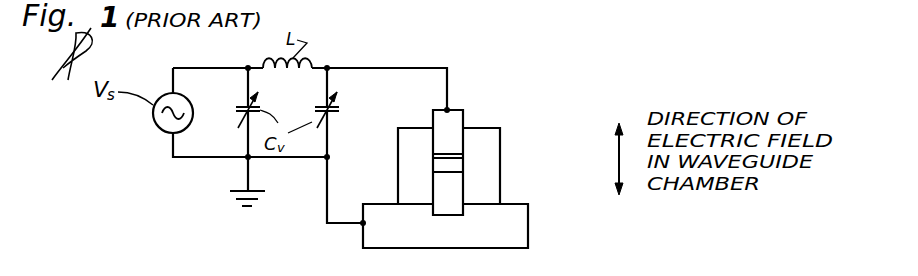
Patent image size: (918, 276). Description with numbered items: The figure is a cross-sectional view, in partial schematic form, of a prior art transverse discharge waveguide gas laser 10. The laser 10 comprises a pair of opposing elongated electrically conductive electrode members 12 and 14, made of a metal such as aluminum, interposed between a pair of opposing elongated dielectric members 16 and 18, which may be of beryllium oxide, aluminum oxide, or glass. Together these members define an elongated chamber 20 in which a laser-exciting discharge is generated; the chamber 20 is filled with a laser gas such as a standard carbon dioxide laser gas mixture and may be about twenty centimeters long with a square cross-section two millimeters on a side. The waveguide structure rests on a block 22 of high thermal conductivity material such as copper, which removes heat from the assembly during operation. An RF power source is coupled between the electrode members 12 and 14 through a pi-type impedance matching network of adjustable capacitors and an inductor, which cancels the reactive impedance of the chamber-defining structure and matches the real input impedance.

The waveguide laser 10 is at (520, 97).
The electrode member 12 is at (463, 118).
The electrode member 14 is at (455, 190).
The dielectric member 16 is at (408, 130).
The dielectric member 18 is at (500, 155).
The chamber 20 is at (445, 166).
The block 22 is at (528, 222).